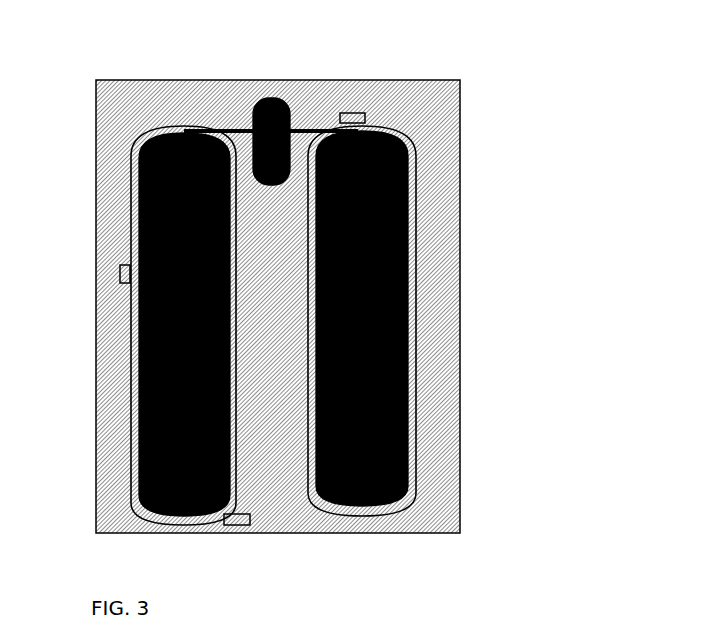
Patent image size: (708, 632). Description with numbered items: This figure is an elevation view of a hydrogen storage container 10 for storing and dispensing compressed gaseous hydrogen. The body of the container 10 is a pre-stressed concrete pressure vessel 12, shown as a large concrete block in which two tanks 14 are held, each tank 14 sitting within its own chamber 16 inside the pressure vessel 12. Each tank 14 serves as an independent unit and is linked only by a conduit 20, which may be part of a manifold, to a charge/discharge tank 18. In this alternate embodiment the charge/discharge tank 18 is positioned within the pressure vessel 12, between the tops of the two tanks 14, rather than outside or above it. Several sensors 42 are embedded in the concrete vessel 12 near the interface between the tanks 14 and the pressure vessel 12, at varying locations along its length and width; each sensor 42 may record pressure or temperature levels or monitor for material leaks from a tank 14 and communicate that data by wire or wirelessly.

The hydrogen storage container 10 is at (306, 316).
The pre-stressed concrete pressure vessel 12 is at (432, 368).
The tank 14 is at (400, 202).
The chamber 16 is at (400, 267).
The charge/discharge tank 18 is at (265, 90).
The conduit 20 is at (223, 123).
The sensor 42 is at (343, 105).